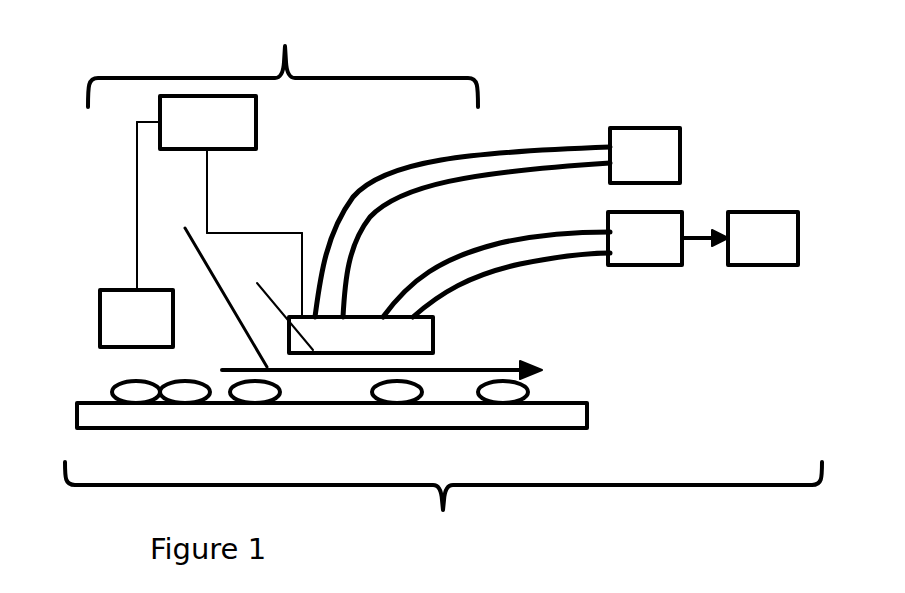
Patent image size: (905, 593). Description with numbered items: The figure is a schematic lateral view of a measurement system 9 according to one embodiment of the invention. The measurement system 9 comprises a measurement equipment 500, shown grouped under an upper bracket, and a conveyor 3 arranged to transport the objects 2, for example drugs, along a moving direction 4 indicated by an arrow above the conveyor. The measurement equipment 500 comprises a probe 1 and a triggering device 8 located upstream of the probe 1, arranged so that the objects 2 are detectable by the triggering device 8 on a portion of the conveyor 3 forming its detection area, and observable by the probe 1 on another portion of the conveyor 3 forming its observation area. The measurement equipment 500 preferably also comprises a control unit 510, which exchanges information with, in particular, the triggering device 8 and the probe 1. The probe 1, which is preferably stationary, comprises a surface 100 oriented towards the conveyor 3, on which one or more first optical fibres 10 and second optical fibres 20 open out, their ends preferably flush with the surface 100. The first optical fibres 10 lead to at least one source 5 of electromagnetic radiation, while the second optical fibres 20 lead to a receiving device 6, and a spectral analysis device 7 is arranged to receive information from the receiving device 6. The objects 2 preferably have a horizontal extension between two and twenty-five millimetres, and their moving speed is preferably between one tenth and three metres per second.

The probe 1 is at (370, 350).
The objects 2 is at (503, 392).
The conveyor 3 is at (560, 415).
The moving direction 4 is at (220, 284).
The source of electromagnetic radiation 5 is at (654, 169).
The receiving device 6 is at (654, 251).
The spectral analysis device 7 is at (772, 251).
The triggering device 8 is at (145, 334).
The measurement system 9 is at (443, 507).
The first optical fibres 10 is at (368, 232).
The second optical fibres 20 is at (507, 248).
The surface 100 is at (267, 303).
The measurement equipment 500 is at (283, 61).
The control unit 510 is at (184, 136).